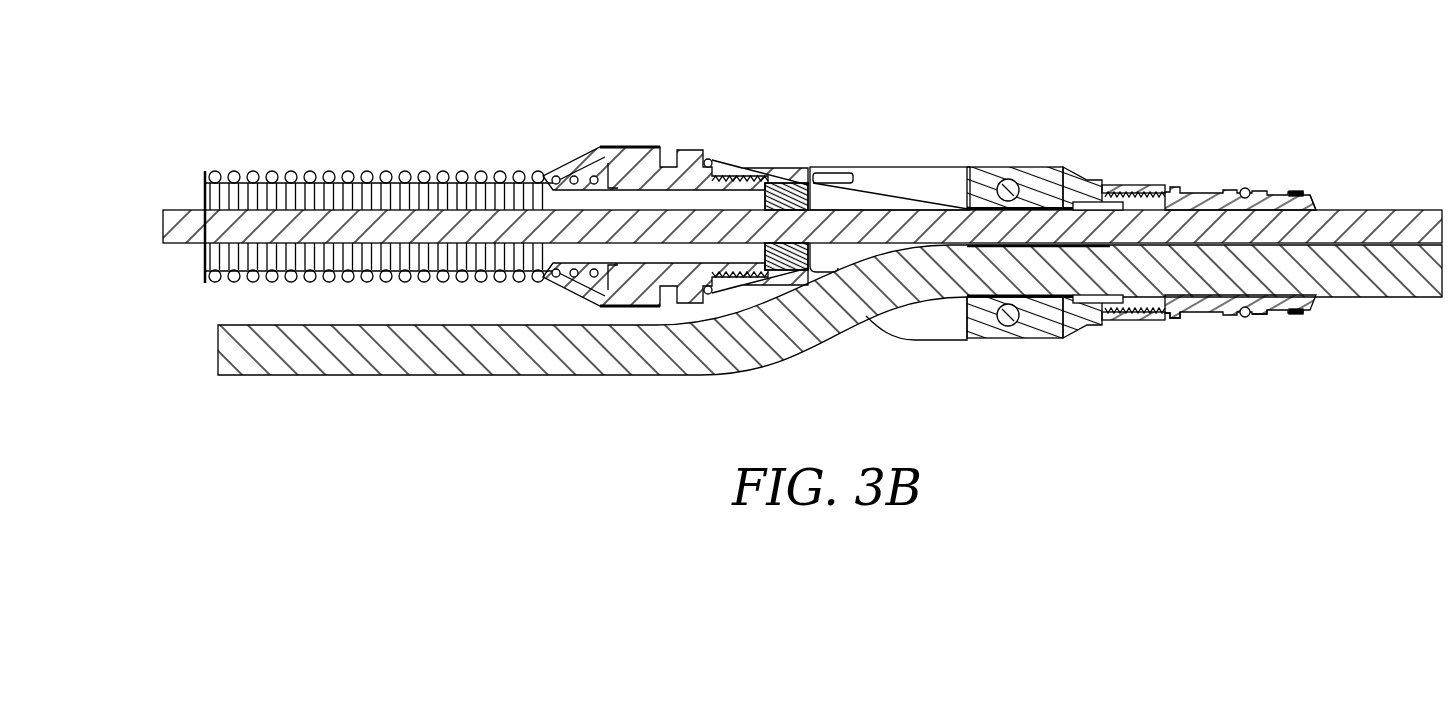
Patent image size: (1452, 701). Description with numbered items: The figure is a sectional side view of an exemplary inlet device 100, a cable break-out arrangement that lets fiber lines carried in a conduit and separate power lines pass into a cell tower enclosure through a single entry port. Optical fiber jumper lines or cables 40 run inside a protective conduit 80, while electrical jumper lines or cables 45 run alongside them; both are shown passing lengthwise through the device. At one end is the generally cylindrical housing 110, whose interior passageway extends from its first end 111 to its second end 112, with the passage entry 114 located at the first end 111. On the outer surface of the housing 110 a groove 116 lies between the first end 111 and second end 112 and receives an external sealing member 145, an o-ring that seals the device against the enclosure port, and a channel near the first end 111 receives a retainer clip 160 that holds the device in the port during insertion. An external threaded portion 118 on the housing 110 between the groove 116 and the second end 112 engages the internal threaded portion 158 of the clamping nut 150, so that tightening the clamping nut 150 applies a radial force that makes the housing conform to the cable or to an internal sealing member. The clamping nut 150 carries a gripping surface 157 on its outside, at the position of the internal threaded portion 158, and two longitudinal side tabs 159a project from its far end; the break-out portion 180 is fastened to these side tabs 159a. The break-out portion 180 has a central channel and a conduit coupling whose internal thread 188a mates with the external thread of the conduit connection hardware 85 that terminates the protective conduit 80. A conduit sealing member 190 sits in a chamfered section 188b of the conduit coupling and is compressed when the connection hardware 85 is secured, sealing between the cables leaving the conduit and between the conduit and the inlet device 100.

The optical fiber jumper lines or cables 40 is at (175, 207).
The electrical jumper lines or cables 45 is at (502, 352).
The protective conduit 80 is at (395, 172).
The conduit connection hardware 85 is at (685, 138).
The internal thread 188a is at (748, 174).
The chamfered section 188b is at (772, 180).
The conduit sealing member 190 is at (792, 186).
The break-out portion 180 is at (884, 158).
The inlet device 100 is at (1161, 214).
The longitudinal side tabs 159a is at (987, 178).
The clamping nut 150 is at (1074, 165).
The second end 112 is at (1100, 200).
The gripping surface 157 is at (1153, 188).
The internal threaded portion 158 is at (1135, 313).
The housing 110 is at (1203, 198).
The external threaded portion 118 is at (1168, 305).
The external sealing member 145 is at (1247, 190).
The first end 111 is at (1312, 190).
The retainer clip 160 is at (1298, 314).
The groove 116 is at (1262, 300).
The passage entry 114 is at (1322, 208).